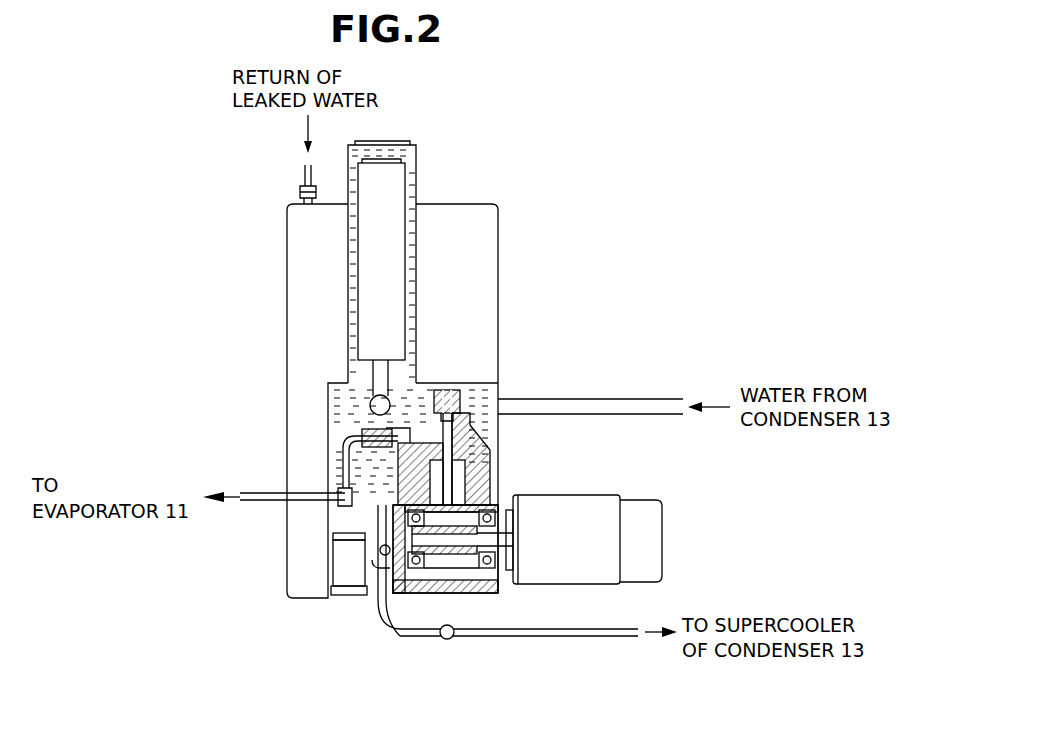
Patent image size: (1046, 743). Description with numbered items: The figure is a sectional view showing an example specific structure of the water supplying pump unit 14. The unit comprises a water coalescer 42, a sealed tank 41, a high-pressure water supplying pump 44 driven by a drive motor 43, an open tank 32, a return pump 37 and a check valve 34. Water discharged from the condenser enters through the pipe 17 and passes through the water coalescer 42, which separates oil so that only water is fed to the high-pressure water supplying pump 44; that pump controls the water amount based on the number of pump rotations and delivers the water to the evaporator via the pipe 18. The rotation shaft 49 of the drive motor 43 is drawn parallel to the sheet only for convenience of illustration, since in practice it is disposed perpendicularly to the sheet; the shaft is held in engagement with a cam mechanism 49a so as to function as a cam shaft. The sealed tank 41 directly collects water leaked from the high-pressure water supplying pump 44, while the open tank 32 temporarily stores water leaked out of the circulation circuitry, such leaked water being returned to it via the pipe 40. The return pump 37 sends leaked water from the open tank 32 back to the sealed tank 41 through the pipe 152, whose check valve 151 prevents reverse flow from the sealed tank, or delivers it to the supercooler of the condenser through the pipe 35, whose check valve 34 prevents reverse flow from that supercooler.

The water supplying pump unit 14 is at (470, 110).
The pipe 17 is at (622, 400).
The pipe 18 is at (265, 500).
The open tank 32 is at (298, 264).
The check valve 34 is at (452, 637).
The pipe 35 is at (562, 638).
The return pump 37 is at (352, 582).
The pipe 40 is at (304, 176).
The sealed tank 41 is at (403, 378).
The water coalescer 42 is at (403, 230).
The drive motor 43 is at (585, 507).
The high-pressure water supplying pump 44 is at (470, 408).
The rotation shaft 49 is at (443, 540).
The cam mechanism 49a is at (470, 512).
The check valve 151 is at (380, 549).
The pipe 152 is at (405, 583).